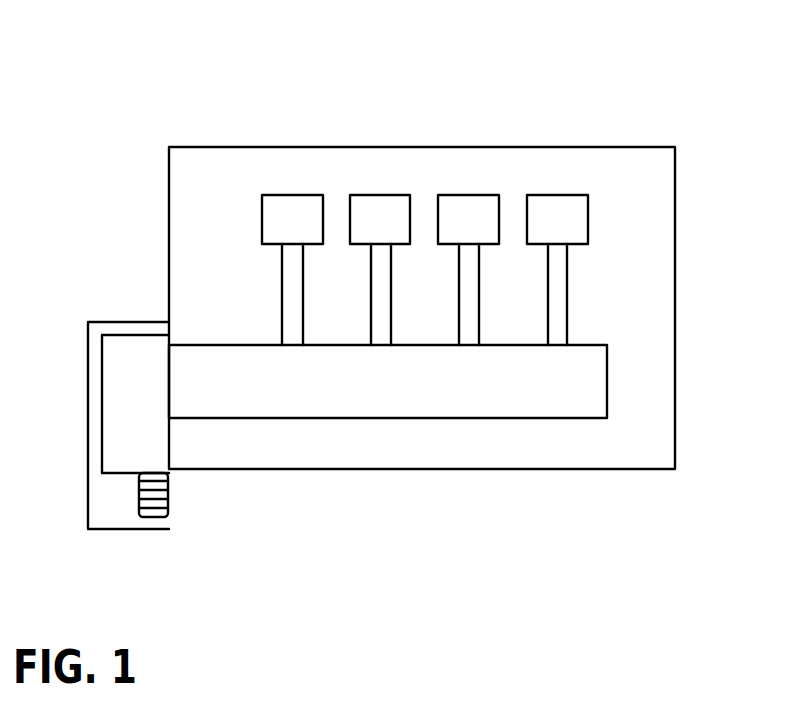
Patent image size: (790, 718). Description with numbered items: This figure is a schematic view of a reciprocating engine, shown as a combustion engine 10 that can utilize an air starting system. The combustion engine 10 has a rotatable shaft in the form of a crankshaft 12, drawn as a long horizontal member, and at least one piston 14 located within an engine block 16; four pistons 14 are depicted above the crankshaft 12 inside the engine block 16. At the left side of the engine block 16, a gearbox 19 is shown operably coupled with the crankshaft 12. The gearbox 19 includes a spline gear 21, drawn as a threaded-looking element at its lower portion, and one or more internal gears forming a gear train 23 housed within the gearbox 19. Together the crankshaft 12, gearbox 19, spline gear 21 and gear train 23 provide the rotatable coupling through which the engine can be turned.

The combustion engine 10 is at (184, 51).
The crankshaft 12 is at (607, 381).
The piston 14 is at (364, 195).
The engine block 16 is at (675, 213).
The gearbox 19 is at (116, 322).
The spline gear 21 is at (153, 513).
The gear train 23 is at (102, 410).